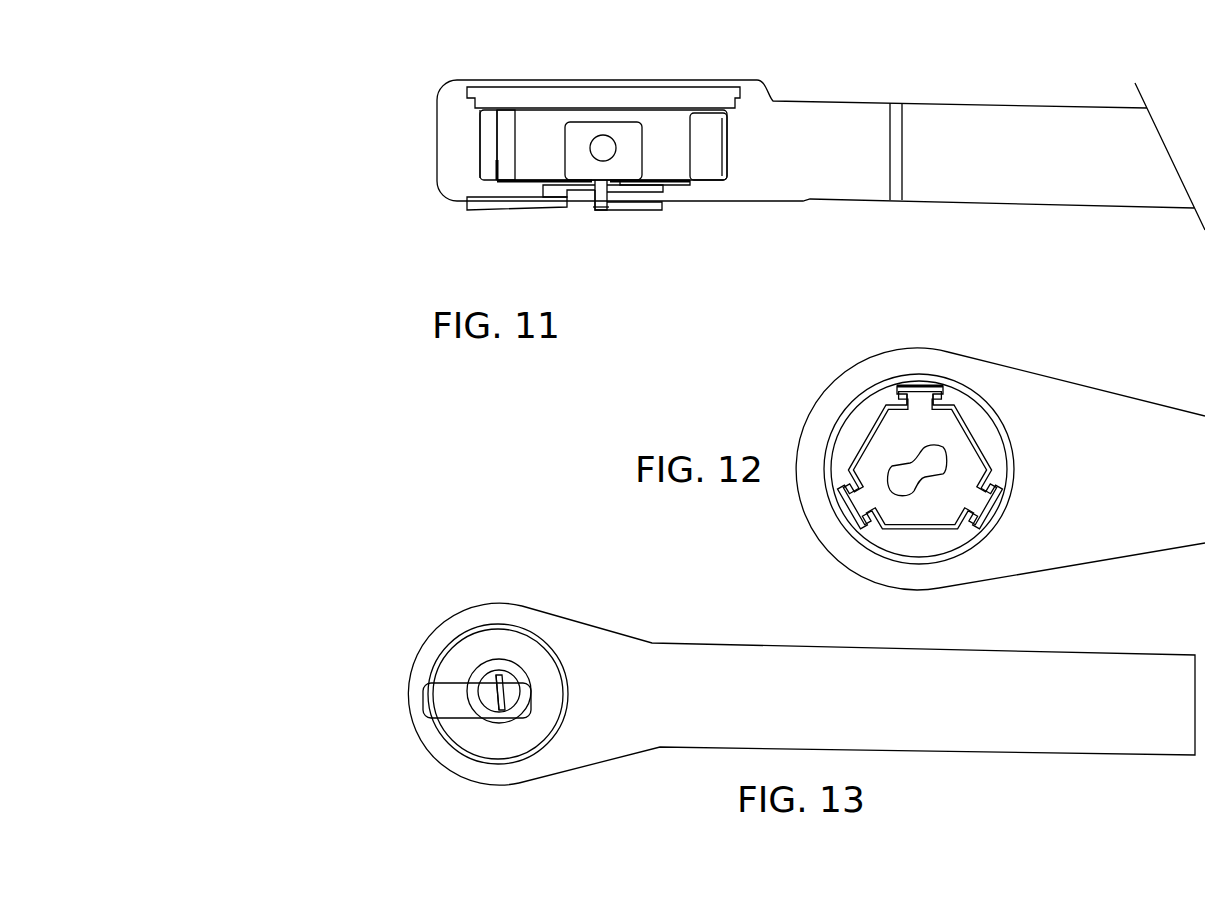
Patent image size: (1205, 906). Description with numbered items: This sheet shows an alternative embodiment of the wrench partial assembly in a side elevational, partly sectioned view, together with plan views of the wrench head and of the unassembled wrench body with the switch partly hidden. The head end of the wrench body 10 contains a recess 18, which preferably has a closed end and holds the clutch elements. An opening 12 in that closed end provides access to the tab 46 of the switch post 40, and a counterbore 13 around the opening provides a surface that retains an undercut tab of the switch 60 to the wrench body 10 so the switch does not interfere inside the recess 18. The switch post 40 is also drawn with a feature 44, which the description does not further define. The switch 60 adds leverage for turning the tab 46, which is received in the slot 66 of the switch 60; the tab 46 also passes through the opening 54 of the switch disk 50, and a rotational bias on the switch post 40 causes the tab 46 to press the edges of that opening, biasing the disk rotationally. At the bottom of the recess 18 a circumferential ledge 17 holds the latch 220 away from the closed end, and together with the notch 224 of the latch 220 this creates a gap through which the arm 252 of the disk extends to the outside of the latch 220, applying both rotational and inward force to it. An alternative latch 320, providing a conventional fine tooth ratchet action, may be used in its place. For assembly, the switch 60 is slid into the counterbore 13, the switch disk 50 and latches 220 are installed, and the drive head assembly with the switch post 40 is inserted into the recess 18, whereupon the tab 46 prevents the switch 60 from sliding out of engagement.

In FIG. 11, the wrench body 10 is at (1008, 105).
In FIG. 13, the wrench body 10 is at (801, 694).
In FIG. 11, the opening 12 is at (618, 202).
In FIG. 13, the opening 12 is at (513, 670).
In FIG. 11, the counterbore 13 is at (653, 192).
In FIG. 13, the counterbore 13 is at (500, 668).
In FIG. 11, the circumferential ledge 17 is at (483, 180).
In FIG. 12, the circumferential ledge 17 is at (910, 378).
In FIG. 11, the recess 18 is at (665, 128).
In FIG. 12, the recess 18 is at (932, 493).
In FIG. 13, the recess 18 is at (533, 728).
In FIG. 11, the switch post 40 is at (637, 152).
In FIG. 11, the hole 44 is at (607, 143).
In FIG. 11, the tab 46 is at (600, 190).
In FIG. 11, the switch disk 50 is at (530, 182).
In FIG. 12, the switch disk 50 is at (947, 427).
In FIG. 11, the opening 54 is at (592, 182).
In FIG. 12, the opening 54 is at (935, 463).
In FIG. 11, the switch 60 is at (528, 208).
In FIG. 13, the switch 60 is at (445, 702).
In FIG. 11, the slot 66 is at (600, 210).
In FIG. 13, the slot 66 is at (495, 708).
In FIG. 11, the latch 220 is at (510, 128).
In FIG. 12, the latch 220 is at (968, 405).
In FIG. 11, the notch 224 is at (488, 118).
In FIG. 12, the notch 224 is at (905, 390).
In FIG. 11, the arm 252 is at (497, 165).
In FIG. 12, the arm 252 is at (918, 385).
In FIG. 11, the latch 320 is at (708, 160).
In FIG. 12, the latch 320 is at (985, 415).